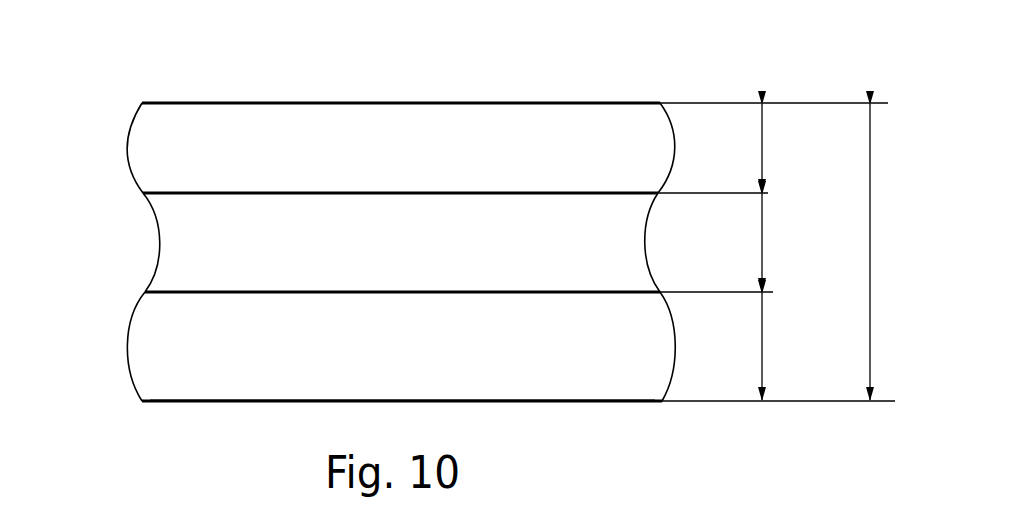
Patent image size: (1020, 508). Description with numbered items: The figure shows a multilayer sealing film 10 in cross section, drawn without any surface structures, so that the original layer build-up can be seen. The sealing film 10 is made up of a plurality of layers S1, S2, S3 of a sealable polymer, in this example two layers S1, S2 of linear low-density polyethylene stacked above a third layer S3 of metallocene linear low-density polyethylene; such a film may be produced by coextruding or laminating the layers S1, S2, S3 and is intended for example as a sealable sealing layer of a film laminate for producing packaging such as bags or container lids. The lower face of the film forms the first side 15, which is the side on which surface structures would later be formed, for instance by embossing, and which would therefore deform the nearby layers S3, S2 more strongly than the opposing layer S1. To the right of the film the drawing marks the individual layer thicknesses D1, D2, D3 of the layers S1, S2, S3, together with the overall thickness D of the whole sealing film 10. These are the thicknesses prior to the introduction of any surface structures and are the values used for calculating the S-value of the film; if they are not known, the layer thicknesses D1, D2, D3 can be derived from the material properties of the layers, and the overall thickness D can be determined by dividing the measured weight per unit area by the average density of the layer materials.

The multilayer sealing film 10 is at (584, 100).
The first side 15 is at (598, 402).
The layer S1 is at (183, 168).
The layer S2 is at (220, 232).
The layer S3 is at (220, 345).
The overall thickness D is at (856, 252).
The layer thickness D1 is at (742, 148).
The layer thickness D2 is at (742, 242).
The layer thickness D3 is at (742, 346).